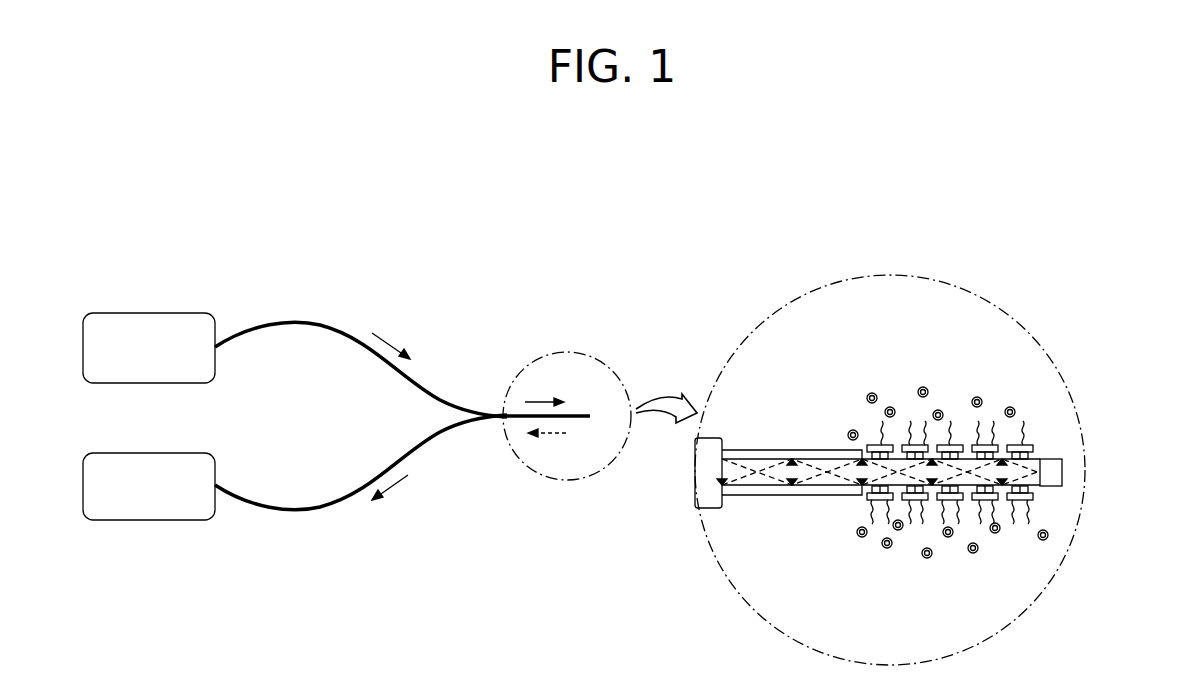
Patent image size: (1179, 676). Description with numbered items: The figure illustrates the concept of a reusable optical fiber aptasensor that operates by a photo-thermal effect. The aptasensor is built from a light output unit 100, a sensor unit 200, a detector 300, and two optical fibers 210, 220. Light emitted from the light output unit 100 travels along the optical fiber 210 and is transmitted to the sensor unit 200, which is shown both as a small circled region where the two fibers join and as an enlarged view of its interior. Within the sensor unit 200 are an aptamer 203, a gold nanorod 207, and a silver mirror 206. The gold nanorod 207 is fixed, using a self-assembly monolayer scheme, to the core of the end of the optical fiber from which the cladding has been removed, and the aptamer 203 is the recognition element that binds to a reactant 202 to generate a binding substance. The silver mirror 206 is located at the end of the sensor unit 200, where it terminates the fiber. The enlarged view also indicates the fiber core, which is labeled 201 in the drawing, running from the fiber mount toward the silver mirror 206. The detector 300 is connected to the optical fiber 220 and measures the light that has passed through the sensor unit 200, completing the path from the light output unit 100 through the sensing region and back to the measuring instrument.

The light output unit 100 is at (148, 313).
The sensor unit 200 is at (568, 352).
The optical fiber core 201 is at (767, 468).
The reactant 202 is at (867, 392).
The aptamer 203 is at (882, 422).
The silver mirror 206 is at (1055, 477).
The gold nanorod 207 is at (1035, 450).
The optical fiber 210 is at (328, 325).
The optical fiber 220 is at (328, 509).
The detector 300 is at (148, 520).